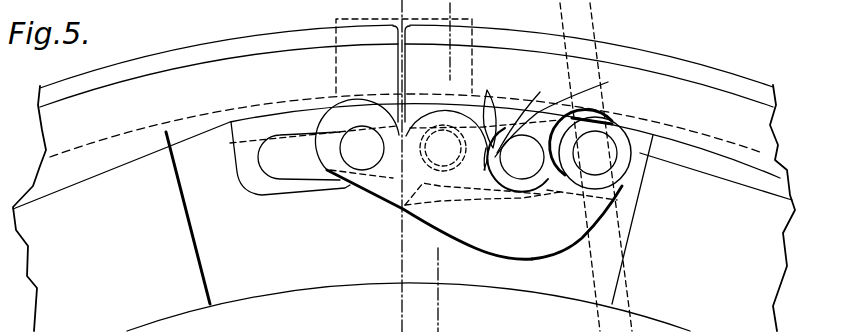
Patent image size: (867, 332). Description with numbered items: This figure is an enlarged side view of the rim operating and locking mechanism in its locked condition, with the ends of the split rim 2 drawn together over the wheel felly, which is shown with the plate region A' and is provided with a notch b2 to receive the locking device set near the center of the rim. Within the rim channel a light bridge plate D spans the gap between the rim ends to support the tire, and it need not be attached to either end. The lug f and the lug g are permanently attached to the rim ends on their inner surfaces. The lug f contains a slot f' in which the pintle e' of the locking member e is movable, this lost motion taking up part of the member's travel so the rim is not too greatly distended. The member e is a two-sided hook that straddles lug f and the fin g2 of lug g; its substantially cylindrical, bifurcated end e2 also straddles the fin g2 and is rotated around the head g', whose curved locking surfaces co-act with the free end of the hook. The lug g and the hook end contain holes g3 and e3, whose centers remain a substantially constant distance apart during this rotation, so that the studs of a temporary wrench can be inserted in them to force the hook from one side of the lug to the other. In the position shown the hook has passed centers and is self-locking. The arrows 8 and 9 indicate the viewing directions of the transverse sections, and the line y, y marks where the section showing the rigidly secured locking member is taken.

The rim 2 is at (404, 178).
The plate A' is at (164, 218).
The notch b2 is at (281, 266).
The lug f is at (290, 180).
The slot f' is at (299, 181).
The pintle e' is at (362, 182).
The locking member e is at (395, 179).
The cylindrical end e2 is at (548, 188).
The hole e3 is at (613, 178).
The lug g is at (563, 167).
The head g' is at (517, 132).
The fin g2 is at (488, 90).
The hole g3 is at (612, 224).
The bridge plate D is at (463, 22).
The section line y y is at (452, 41).
The arrow 8 is at (385, 10).
The arrow 9 is at (415, 10).